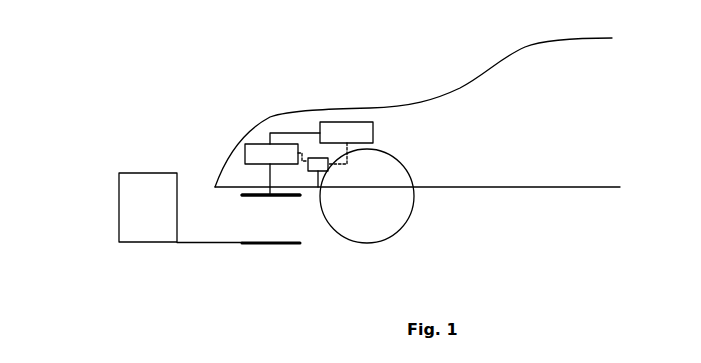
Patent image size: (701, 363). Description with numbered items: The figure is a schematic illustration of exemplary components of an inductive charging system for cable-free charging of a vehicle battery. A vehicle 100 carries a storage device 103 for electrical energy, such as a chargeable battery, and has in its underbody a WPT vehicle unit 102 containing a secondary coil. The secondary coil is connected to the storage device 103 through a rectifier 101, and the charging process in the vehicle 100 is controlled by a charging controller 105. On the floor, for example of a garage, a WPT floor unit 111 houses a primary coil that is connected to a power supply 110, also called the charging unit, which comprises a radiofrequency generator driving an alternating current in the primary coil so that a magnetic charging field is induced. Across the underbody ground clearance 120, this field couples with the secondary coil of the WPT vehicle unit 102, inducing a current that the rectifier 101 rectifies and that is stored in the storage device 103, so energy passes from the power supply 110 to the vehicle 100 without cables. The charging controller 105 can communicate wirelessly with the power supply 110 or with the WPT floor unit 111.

The vehicle 100 is at (463, 63).
The rectifier 101 is at (252, 148).
The WPT vehicle unit 102 is at (283, 197).
The storage device 103 is at (335, 127).
The charging controller 105 is at (313, 158).
The power supply 110 is at (130, 208).
The WPT floor unit 111 is at (300, 243).
The underbody ground clearance 120 is at (252, 217).